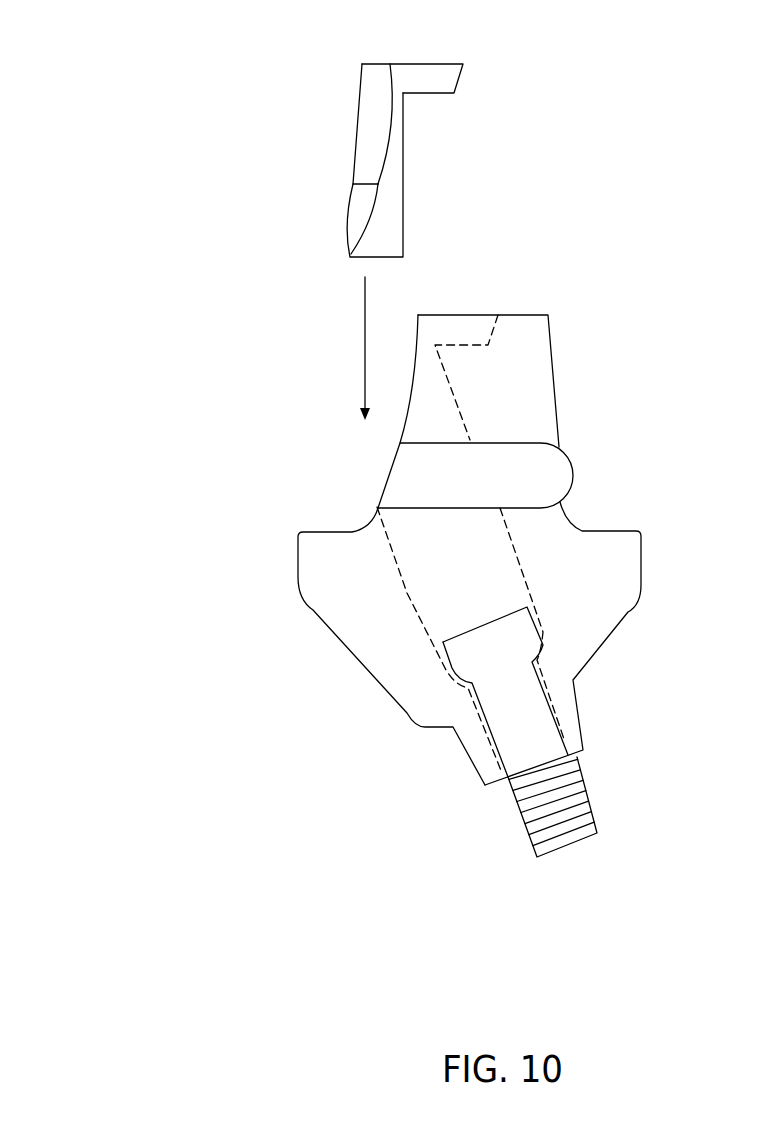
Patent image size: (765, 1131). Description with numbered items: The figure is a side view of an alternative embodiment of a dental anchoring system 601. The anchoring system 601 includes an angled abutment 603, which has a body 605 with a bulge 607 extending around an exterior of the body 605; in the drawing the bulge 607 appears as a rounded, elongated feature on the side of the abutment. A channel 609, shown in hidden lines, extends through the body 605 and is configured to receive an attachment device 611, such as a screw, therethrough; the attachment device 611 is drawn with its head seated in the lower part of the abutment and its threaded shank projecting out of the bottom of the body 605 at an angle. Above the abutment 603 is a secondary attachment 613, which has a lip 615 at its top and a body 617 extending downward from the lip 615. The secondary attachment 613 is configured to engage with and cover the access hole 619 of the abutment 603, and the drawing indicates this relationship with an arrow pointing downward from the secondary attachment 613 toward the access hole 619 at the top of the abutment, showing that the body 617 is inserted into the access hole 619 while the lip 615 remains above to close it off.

The dental anchoring system 601 is at (150, 110).
The angled abutment 603 is at (207, 471).
The body 605 is at (296, 570).
The bulge 607 is at (574, 473).
The channel 609 is at (407, 593).
The attachment device 611 is at (443, 643).
The secondary attachment 613 is at (320, 57).
The lip 615 is at (458, 81).
The body 617 is at (405, 212).
The access hole 619 is at (319, 412).